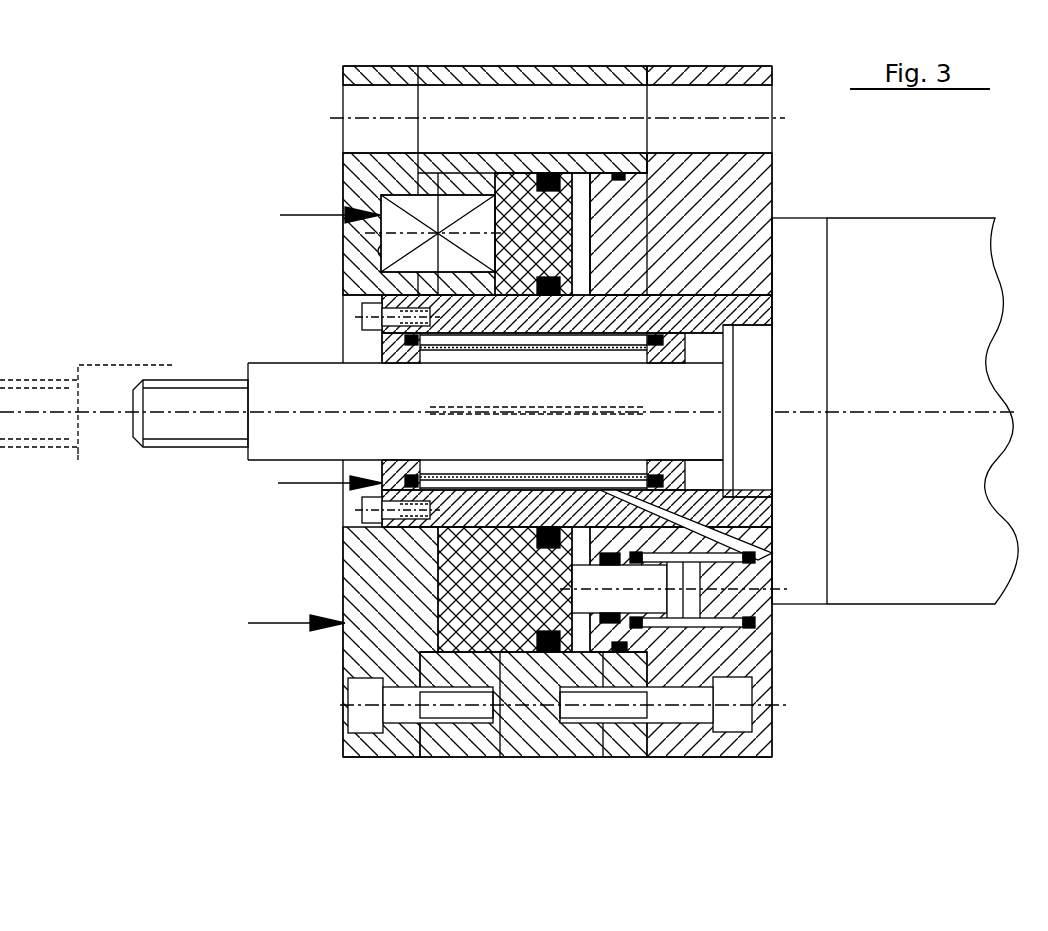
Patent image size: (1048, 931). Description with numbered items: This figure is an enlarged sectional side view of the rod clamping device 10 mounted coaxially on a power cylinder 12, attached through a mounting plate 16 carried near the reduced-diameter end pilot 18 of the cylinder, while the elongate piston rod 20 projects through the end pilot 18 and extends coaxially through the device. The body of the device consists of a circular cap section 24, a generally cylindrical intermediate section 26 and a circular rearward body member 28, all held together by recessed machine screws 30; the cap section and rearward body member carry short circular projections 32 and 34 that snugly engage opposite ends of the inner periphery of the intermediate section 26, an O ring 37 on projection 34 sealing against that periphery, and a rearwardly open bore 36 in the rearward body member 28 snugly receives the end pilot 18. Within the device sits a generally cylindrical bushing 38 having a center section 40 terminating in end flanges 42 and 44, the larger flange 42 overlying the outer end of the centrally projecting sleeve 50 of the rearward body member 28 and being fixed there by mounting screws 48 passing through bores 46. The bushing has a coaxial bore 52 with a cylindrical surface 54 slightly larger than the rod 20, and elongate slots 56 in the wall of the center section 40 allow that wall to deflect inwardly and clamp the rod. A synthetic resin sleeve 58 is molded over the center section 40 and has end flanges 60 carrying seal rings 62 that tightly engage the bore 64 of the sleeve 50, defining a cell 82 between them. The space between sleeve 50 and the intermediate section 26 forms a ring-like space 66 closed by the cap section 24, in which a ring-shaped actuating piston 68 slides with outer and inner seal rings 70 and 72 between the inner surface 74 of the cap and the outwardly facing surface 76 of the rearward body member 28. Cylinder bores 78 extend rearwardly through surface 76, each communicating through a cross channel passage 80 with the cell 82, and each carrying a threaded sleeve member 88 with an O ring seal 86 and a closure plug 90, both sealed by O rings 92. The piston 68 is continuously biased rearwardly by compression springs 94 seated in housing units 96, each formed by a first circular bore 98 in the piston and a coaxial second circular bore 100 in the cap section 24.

The rod clamping device 10 is at (492, 608).
The power cylinder 12 is at (940, 314).
The mounting plate 16 is at (812, 292).
The end pilot 18 is at (763, 442).
The piston rod 20 is at (308, 398).
The cap section 24 is at (343, 70).
The intermediate section 26 is at (522, 70).
The rearward body member 28 is at (705, 264).
The recessed machine screws 30 is at (358, 714).
The circular projection 32 is at (435, 652).
The circular projection 34 is at (592, 176).
The bore 36 is at (750, 326).
The O ring 37 is at (620, 186).
The bushing 38 is at (314, 483).
The center section 40 is at (640, 342).
The end flange 42 is at (390, 343).
The end flange 44 is at (685, 355).
The bores 46 is at (372, 512).
The mounting screws 48 is at (366, 325).
The sleeve 50 is at (530, 335).
The bore 52 is at (410, 470).
The cylindrical surface 54 is at (633, 466).
The elongate slots 56 is at (544, 466).
The sleeve 58 is at (583, 475).
The end flanges 60 is at (660, 484).
The seal rings 62 is at (428, 492).
The bore 64 is at (710, 346).
The ring like space 66 is at (580, 173).
The actuating piston 68 is at (490, 652).
The outer seal ring 70 is at (537, 178).
The inner seal ring 72 is at (550, 296).
The inner surface 74 is at (446, 618).
The outwardly facing surface 76 is at (587, 262).
The cylinder bores 78 is at (712, 608).
The cross channel passage 80 is at (688, 523).
The cell 82 is at (513, 487).
The O ring seal 86 is at (608, 652).
The sleeve member 88 is at (578, 652).
The closure plug 90 is at (766, 583).
The O rings 92 is at (745, 629).
The compression springs 94 is at (430, 258).
The housing units 96 is at (312, 215).
The first circular bore 98 is at (455, 205).
The second circular bore 100 is at (385, 248).